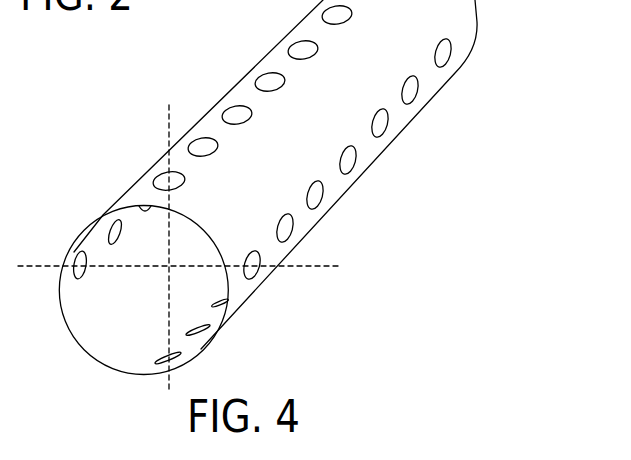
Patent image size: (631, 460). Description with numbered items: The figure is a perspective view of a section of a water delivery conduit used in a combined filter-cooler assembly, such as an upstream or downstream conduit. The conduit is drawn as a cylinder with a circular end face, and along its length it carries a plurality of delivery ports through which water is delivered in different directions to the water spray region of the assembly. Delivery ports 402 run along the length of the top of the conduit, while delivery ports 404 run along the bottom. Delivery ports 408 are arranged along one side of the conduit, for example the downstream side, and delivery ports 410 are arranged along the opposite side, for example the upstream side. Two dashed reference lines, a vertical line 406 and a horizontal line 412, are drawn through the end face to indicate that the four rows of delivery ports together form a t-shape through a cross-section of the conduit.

The delivery ports 402 is at (158, 178).
The delivery ports 404 is at (192, 337).
The line 406 is at (168, 118).
The delivery ports 408 is at (78, 256).
The delivery ports 410 is at (255, 280).
The line 412 is at (320, 268).